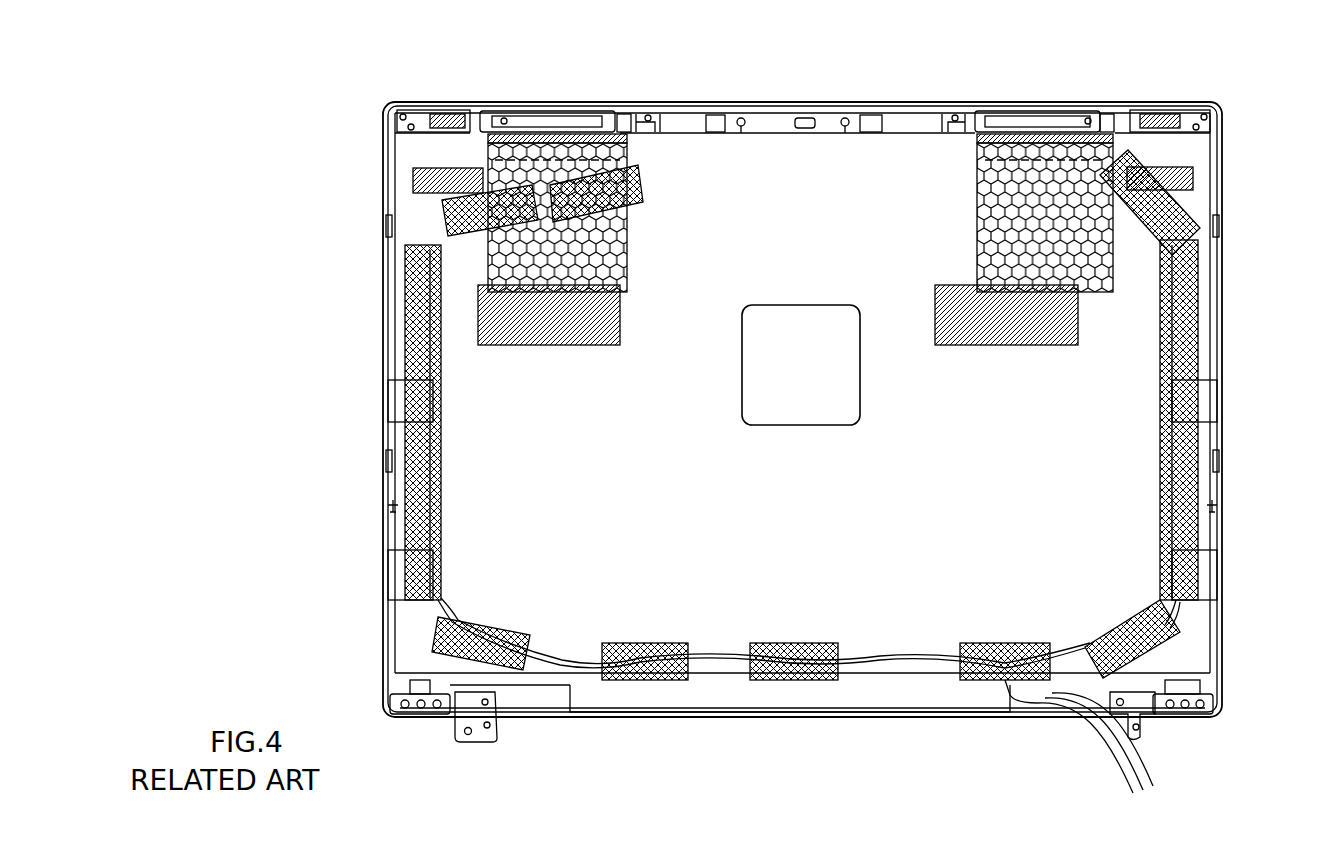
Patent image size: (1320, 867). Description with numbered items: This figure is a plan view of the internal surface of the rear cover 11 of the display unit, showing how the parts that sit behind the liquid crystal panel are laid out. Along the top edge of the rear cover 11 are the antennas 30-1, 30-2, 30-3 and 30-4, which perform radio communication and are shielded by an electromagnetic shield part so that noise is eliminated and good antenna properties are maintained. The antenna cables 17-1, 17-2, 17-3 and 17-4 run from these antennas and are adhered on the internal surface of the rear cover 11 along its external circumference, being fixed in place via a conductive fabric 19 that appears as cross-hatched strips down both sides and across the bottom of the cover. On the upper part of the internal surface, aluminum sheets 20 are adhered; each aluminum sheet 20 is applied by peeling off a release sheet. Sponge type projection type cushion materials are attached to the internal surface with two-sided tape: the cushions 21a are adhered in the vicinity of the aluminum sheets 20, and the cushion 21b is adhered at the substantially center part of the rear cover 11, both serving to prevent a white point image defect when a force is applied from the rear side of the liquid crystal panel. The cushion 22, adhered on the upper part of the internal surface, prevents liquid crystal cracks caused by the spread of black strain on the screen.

The rear cover 11 is at (400, 33).
The antenna cable 17-1 is at (440, 606).
The antenna cable 17-2 is at (440, 630).
The antenna cable 17-3 is at (1175, 607).
The antenna cable 17-4 is at (1180, 602).
The conductive fabric 19 is at (477, 135).
The aluminum sheet 20 is at (525, 130).
The cushion 21a is at (487, 295).
The cushion 21b is at (789, 325).
The cushion 22 is at (606, 130).
The antenna 30-1 is at (433, 120).
The antenna 30-2 is at (640, 125).
The antenna 30-3 is at (975, 120).
The antenna 30-4 is at (1160, 115).